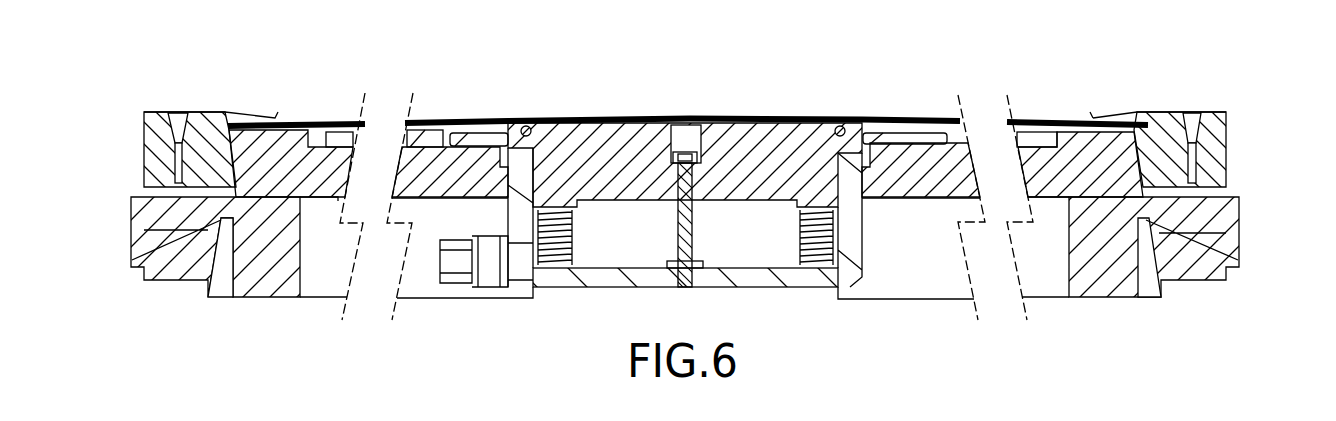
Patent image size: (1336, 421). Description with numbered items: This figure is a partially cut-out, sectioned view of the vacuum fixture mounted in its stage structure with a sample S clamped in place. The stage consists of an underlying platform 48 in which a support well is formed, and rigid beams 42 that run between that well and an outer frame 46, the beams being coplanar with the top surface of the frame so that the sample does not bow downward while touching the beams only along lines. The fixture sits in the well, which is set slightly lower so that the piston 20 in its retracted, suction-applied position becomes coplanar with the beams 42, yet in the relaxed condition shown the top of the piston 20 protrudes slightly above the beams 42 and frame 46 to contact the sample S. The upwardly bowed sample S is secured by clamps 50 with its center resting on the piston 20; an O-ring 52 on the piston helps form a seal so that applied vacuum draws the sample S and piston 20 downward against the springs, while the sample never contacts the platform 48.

The piston 20 is at (745, 150).
The rigid beams 42 is at (340, 130).
The outer frame 46 is at (1212, 236).
The underlying platform 48 is at (325, 165).
The clamps 50 is at (250, 115).
The O-ring 52 is at (530, 126).
The sample S is at (810, 118).